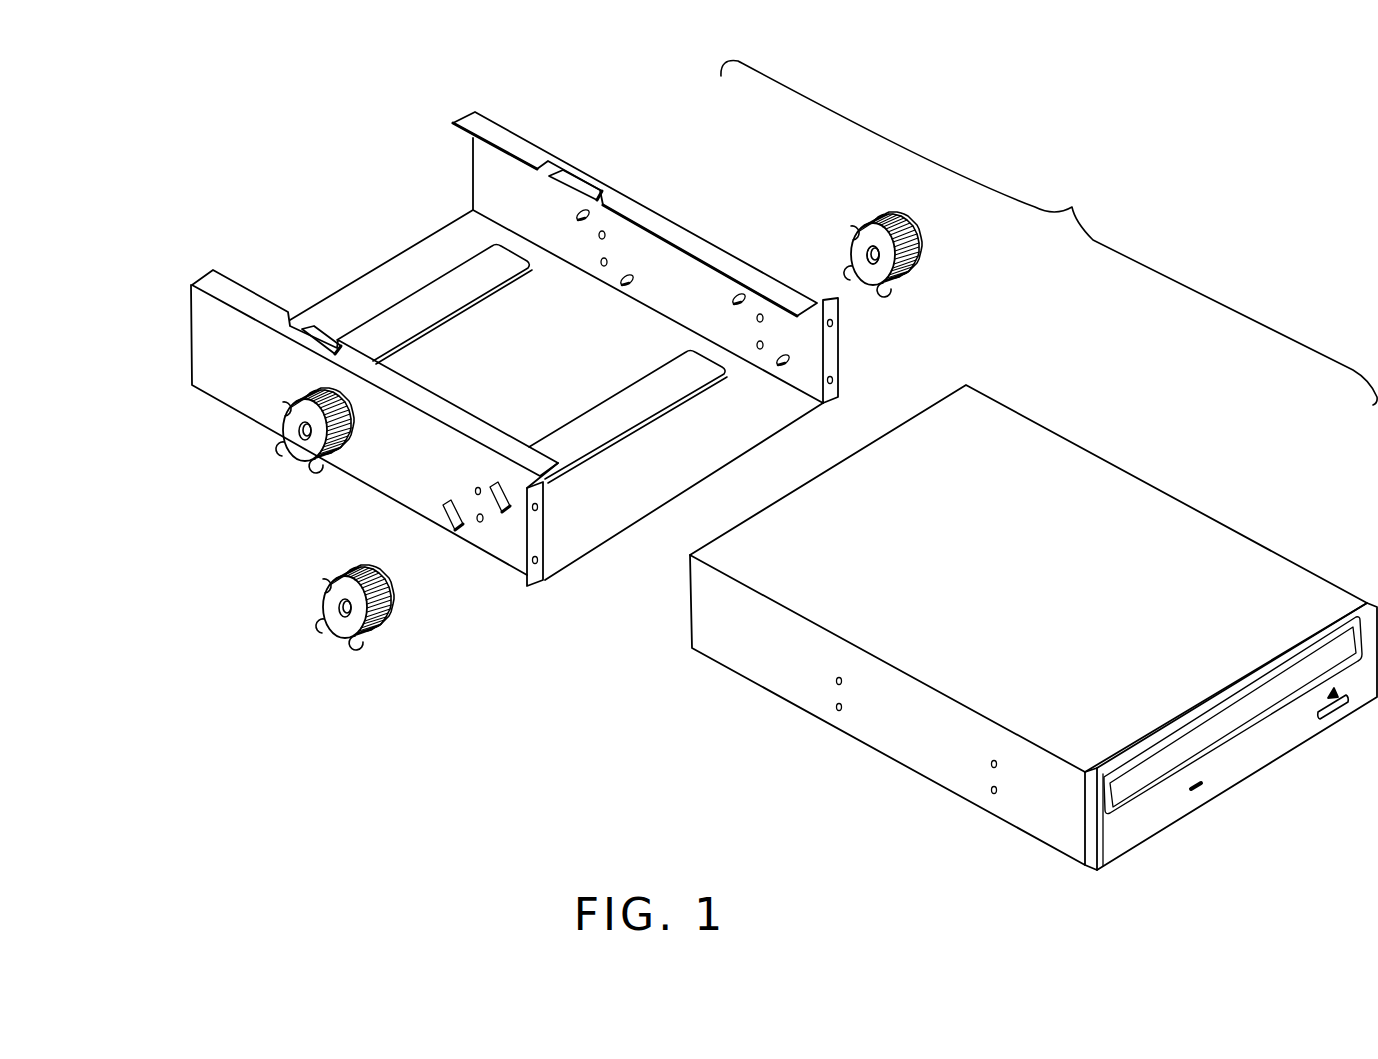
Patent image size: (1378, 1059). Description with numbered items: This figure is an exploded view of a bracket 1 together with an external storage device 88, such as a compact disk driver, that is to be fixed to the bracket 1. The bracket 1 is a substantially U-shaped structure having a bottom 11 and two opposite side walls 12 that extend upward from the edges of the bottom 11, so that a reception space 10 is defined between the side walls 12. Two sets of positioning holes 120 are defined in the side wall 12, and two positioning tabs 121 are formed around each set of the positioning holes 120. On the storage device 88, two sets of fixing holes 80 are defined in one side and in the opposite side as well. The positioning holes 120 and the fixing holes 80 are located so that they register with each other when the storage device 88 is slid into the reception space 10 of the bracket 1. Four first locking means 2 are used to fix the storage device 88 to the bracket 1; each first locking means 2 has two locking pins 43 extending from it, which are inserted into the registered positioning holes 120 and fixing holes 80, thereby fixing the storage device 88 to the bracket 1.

The bracket 1 is at (611, 158).
The first locking means 2 is at (290, 433).
The reception space 10 is at (592, 503).
The bottom 11 is at (393, 273).
The side wall 12 is at (223, 382).
The locking pin 43 is at (852, 263).
The fixing holes 80 is at (836, 708).
The external storage device 88 is at (1033, 627).
The positioning holes 120 is at (482, 523).
The positioning tabs 121 is at (443, 528).